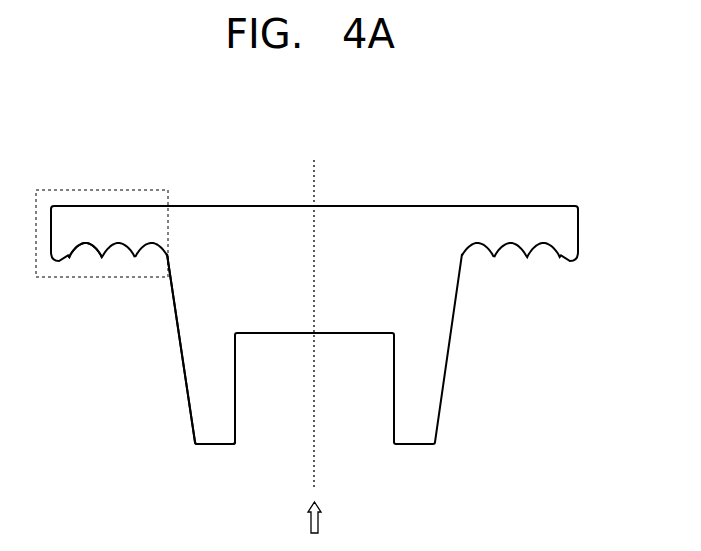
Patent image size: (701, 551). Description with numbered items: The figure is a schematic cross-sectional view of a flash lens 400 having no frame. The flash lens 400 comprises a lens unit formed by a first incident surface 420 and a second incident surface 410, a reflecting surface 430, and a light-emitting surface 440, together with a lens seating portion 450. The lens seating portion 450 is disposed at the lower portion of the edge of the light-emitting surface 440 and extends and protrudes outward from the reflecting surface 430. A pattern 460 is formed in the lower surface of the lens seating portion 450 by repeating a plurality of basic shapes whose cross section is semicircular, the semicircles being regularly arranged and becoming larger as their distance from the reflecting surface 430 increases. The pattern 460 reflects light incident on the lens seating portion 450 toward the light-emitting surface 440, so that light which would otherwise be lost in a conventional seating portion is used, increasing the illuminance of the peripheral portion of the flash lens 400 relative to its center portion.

The flash lens 400 is at (329, 285).
The second incident surface 410 is at (237, 407).
The first incident surface 420 is at (290, 335).
The reflecting surface 430 is at (178, 350).
The light-emitting surface 440 is at (392, 205).
The lens seating portion 450 is at (100, 190).
The pattern 460 is at (60, 263).